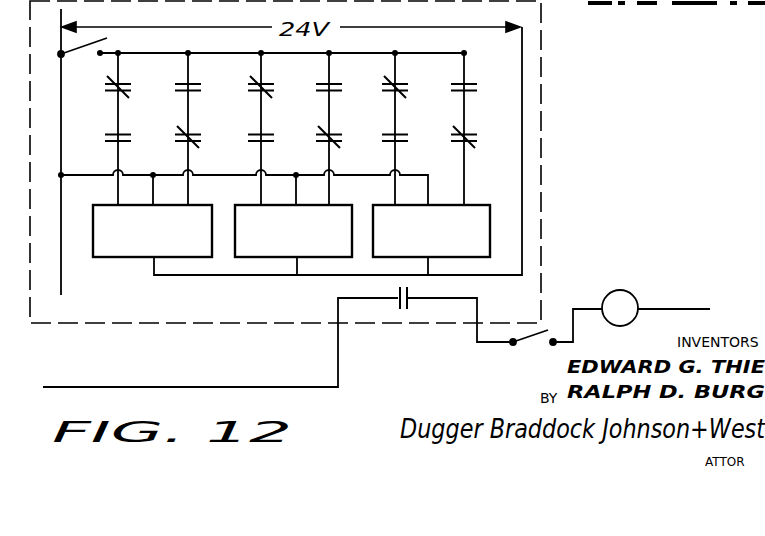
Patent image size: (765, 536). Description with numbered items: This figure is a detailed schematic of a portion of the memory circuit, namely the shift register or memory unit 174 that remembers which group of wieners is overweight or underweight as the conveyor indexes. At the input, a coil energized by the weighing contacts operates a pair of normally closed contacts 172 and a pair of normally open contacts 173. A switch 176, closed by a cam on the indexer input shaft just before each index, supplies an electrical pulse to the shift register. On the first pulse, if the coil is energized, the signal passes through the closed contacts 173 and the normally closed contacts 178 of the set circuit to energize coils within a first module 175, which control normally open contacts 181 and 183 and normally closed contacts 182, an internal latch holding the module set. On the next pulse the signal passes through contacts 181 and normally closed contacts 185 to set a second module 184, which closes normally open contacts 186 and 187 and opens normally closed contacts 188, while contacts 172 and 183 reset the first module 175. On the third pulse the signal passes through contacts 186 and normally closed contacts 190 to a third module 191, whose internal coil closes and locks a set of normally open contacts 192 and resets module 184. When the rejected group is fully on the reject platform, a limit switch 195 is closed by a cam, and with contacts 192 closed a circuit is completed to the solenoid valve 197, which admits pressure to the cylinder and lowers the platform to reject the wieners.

The normally closed contacts 172 is at (160, 80).
The normally open contacts 173 is at (230, 80).
The normally closed contacts 182 is at (302, 80).
The normally open contacts 181 is at (372, 80).
The normally closed contacts 188 is at (437, 80).
The normally open contacts 186 is at (505, 80).
The normally open contacts 183 is at (158, 128).
The normally closed contacts 178 is at (228, 128).
The normally open contacts 187 is at (302, 128).
The normally closed contacts 185 is at (372, 128).
The normally closed contacts 190 is at (505, 128).
The switch 176 is at (86, 57).
The shift register or memory unit 174 is at (542, 37).
The first module 175 is at (176, 243).
The second module 184 is at (312, 244).
The third module 191 is at (452, 244).
The normally open contacts 192 is at (399, 311).
The limit switch 195 is at (527, 343).
The solenoid valve 197 is at (626, 291).